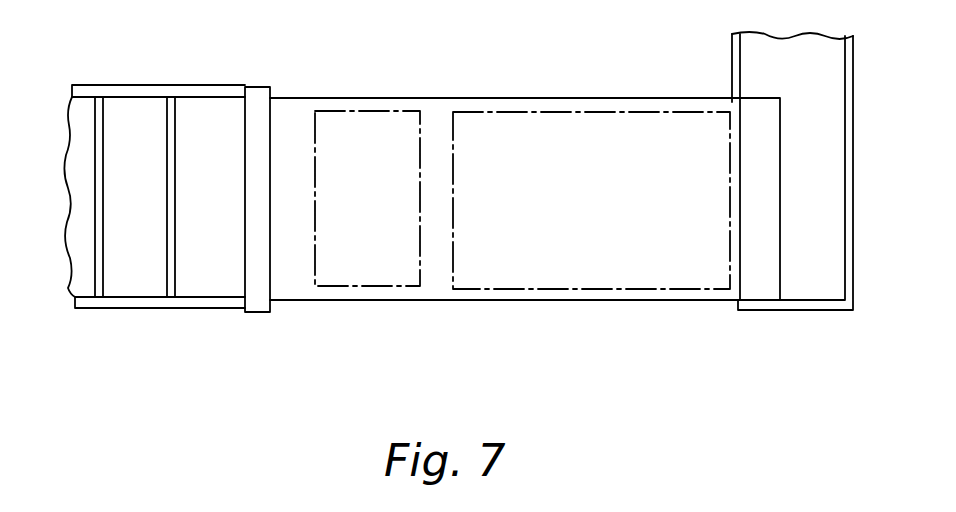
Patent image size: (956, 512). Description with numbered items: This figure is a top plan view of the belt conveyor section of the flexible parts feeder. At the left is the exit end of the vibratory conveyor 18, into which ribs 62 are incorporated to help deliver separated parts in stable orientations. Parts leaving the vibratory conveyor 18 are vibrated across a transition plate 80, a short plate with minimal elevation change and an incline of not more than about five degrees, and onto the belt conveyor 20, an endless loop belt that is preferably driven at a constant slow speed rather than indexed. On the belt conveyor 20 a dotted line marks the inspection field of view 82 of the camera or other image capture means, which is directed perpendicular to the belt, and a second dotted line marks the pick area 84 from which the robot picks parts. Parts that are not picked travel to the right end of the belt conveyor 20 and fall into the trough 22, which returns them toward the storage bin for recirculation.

The vibratory conveyor 18 is at (141, 280).
The belt conveyor 20 is at (645, 297).
The trough 22 is at (813, 200).
The ribs 62 is at (165, 125).
The transition plate 80 is at (258, 108).
The inspection field of view 82 is at (390, 287).
The pick area 84 is at (555, 287).